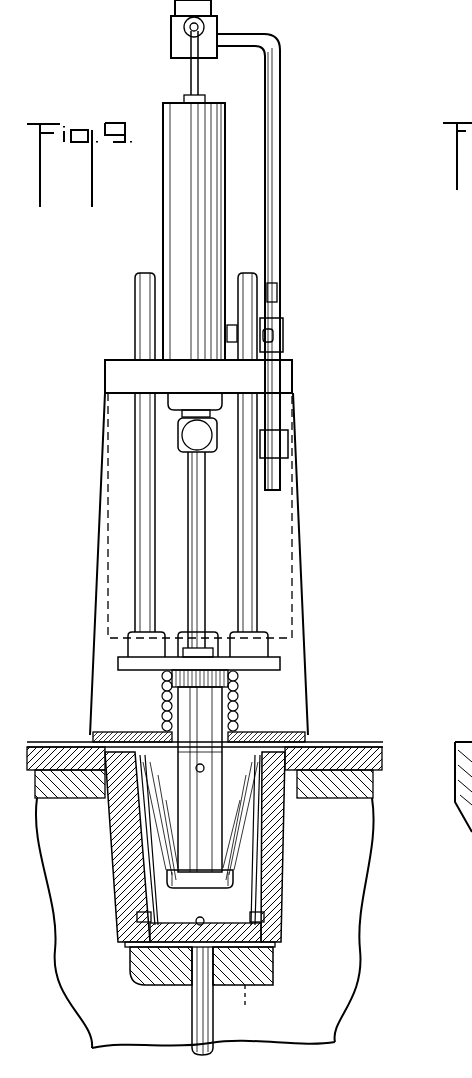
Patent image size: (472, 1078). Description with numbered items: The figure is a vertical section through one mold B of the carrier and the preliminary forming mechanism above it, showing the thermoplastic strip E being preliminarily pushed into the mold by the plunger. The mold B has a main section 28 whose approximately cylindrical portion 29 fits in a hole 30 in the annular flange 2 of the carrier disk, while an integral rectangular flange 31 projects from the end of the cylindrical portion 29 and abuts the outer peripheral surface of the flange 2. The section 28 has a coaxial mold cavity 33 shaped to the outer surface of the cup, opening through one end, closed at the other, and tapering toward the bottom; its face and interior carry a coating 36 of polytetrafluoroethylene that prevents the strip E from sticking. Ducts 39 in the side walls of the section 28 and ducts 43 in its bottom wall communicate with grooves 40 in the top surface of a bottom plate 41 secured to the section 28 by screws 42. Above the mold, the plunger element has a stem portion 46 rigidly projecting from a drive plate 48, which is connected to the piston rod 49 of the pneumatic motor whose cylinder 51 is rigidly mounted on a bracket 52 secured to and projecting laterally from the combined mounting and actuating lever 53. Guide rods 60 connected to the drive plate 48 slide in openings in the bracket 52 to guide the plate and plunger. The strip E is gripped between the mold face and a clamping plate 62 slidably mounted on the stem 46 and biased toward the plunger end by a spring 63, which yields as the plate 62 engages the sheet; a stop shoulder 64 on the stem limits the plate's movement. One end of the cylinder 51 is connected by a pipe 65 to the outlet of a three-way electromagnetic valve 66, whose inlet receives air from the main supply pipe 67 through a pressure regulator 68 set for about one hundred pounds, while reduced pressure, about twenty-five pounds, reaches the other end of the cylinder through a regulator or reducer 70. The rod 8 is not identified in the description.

The 3-way electromagnetic valve 66 is at (176, 46).
The pipe 65 is at (192, 70).
The cylinder 51 is at (180, 185).
The main fluid pressure supply pipe 67 is at (270, 186).
The guide rods 60 is at (140, 300).
The pressure regulator or reducer 70 is at (272, 344).
The bracket 52 is at (120, 375).
The pressure regulator 68 is at (275, 446).
The piston rod 49 is at (197, 526).
The drive plate 48 is at (118, 662).
The combined mounting and actuating first element or lever 53 is at (303, 633).
The spring 63 is at (165, 703).
The stem portion 46 is at (205, 719).
The clamping plate 62 is at (284, 745).
The thermoplastic strip E is at (78, 746).
The rectangular flange 31 is at (310, 748).
The annular flange 2 is at (362, 791).
The cylindrical portion 29 is at (105, 827).
The hole 30 is at (284, 812).
The stop shoulder 64 is at (190, 868).
The mold cavity 33 is at (150, 879).
The main section 28 is at (276, 893).
The coating 36 is at (157, 900).
The ducts 43 is at (226, 931).
The ducts 39 is at (137, 918).
The mold B is at (107, 939).
The grooves 40 is at (146, 966).
The bottom plate 41 is at (262, 969).
The pin 8 is at (193, 1013).
The screws 42 is at (248, 1011).